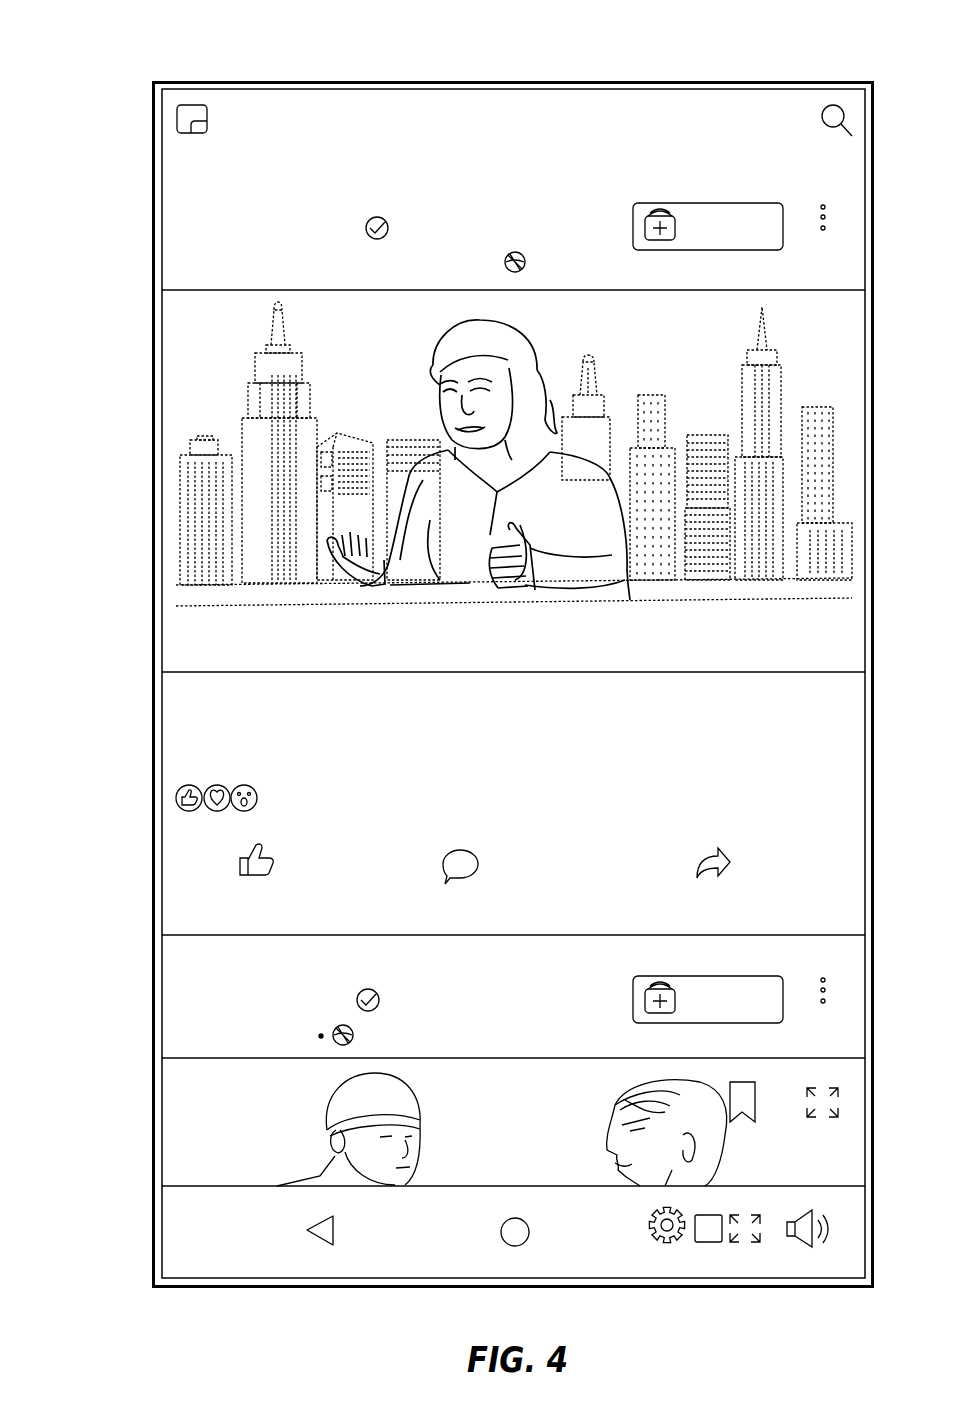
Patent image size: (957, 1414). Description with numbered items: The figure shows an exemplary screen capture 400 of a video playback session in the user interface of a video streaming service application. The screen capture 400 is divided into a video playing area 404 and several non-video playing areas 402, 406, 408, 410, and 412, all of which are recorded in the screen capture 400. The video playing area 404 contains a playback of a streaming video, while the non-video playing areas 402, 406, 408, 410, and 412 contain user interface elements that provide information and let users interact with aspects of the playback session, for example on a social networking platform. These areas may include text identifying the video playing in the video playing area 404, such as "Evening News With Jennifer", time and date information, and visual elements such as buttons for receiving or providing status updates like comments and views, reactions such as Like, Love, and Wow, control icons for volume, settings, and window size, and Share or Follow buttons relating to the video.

The screen capture 400 is at (131, 82).
The non-video playing area 402 is at (180, 202).
The video playing area 404 is at (172, 446).
The non-video playing area 406 is at (172, 795).
The non-video playing area 408 is at (172, 997).
The non-video playing area 410 is at (173, 1142).
The non-video playing area 412 is at (173, 1235).